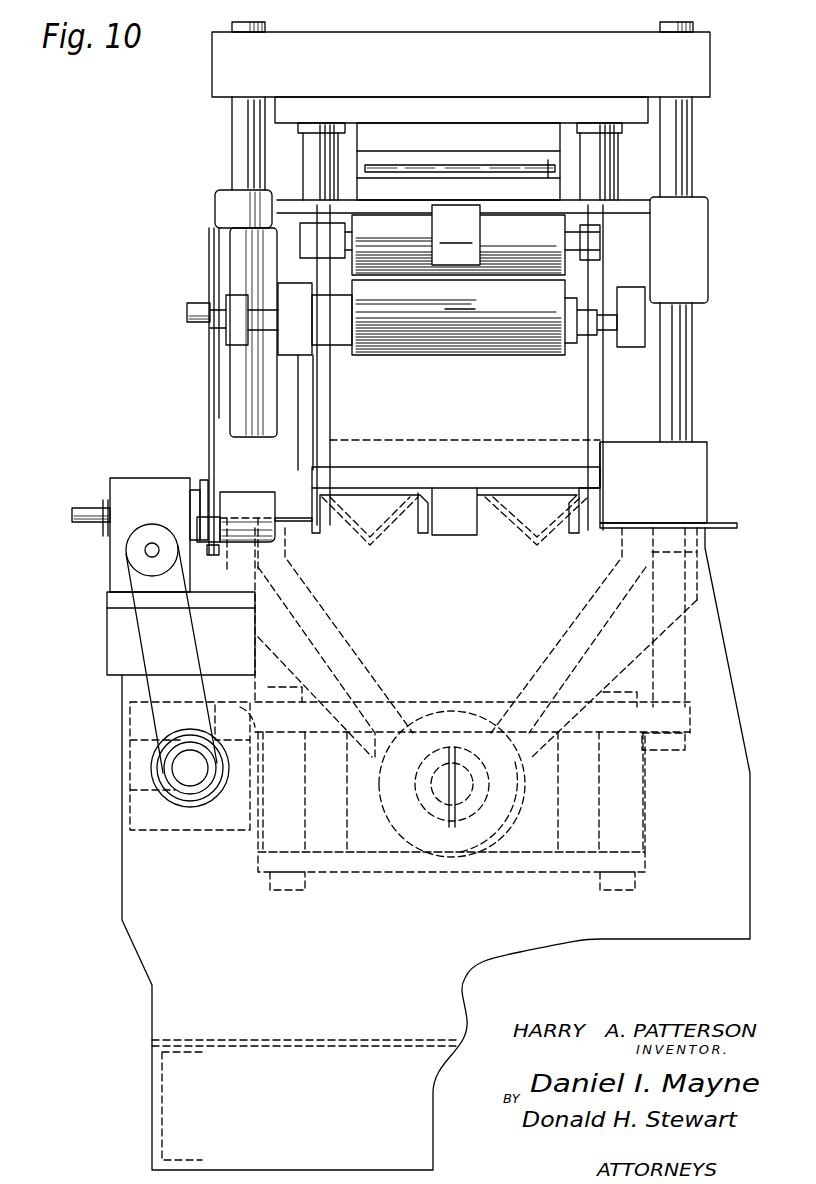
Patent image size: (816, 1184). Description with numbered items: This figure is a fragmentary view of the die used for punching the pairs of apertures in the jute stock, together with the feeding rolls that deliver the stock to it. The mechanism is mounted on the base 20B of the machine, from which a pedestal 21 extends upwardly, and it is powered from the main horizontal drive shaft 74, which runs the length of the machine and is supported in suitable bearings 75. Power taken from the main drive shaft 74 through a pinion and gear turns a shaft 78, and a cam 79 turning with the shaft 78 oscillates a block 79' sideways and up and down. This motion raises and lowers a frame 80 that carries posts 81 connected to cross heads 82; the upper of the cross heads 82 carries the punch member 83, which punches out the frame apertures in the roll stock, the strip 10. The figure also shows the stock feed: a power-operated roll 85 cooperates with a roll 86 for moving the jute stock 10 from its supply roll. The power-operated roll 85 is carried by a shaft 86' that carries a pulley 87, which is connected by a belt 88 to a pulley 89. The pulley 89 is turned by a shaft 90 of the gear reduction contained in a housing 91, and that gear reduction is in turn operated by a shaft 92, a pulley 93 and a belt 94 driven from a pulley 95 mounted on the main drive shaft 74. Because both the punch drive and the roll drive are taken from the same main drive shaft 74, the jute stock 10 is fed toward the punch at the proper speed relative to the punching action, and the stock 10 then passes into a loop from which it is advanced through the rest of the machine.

The strip 10 is at (550, 158).
The base 20B is at (152, 1084).
The pedestal 21 is at (124, 890).
The main horizontal drive shaft 74 is at (188, 770).
The bearings 75 is at (167, 788).
The shaft 78 is at (445, 790).
The cam 79 is at (457, 825).
The block 79' is at (519, 833).
The frame 80 is at (330, 660).
The posts 81 is at (230, 152).
The cross heads 82 is at (217, 73).
The punch member 83 is at (488, 165).
The power-operated roll 85 is at (427, 317).
The roll 86 is at (374, 257).
The shaft 86' is at (198, 312).
The pulley 87 is at (210, 346).
The belt 88 is at (212, 412).
The pulley 89 is at (202, 482).
The shaft 90 is at (198, 508).
The housing 91 is at (142, 480).
The shaft 92 is at (146, 551).
The pulley 93 is at (132, 564).
The belt 94 is at (124, 644).
The pulley 95 is at (204, 798).